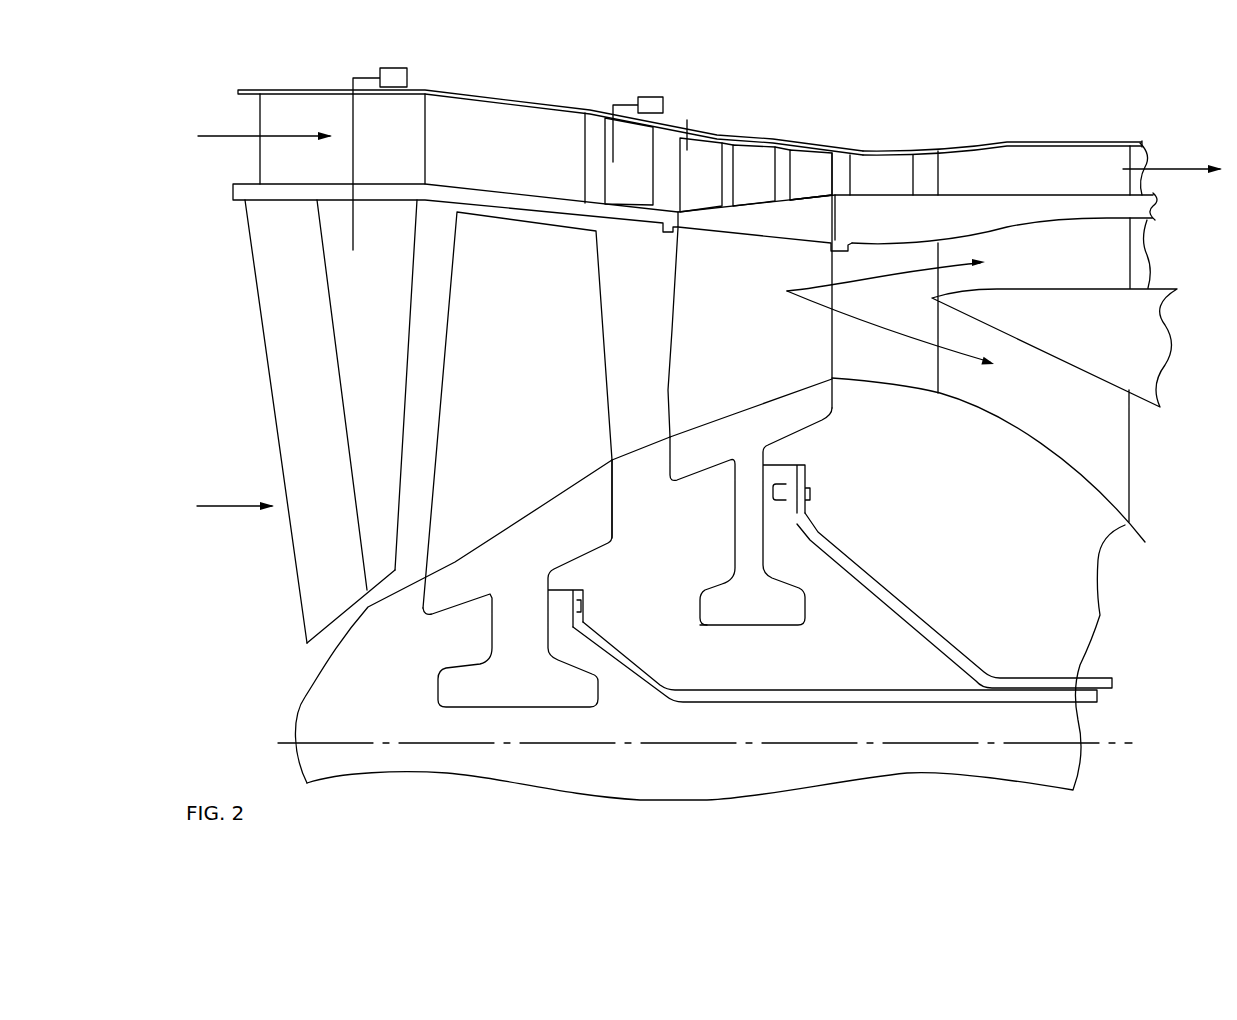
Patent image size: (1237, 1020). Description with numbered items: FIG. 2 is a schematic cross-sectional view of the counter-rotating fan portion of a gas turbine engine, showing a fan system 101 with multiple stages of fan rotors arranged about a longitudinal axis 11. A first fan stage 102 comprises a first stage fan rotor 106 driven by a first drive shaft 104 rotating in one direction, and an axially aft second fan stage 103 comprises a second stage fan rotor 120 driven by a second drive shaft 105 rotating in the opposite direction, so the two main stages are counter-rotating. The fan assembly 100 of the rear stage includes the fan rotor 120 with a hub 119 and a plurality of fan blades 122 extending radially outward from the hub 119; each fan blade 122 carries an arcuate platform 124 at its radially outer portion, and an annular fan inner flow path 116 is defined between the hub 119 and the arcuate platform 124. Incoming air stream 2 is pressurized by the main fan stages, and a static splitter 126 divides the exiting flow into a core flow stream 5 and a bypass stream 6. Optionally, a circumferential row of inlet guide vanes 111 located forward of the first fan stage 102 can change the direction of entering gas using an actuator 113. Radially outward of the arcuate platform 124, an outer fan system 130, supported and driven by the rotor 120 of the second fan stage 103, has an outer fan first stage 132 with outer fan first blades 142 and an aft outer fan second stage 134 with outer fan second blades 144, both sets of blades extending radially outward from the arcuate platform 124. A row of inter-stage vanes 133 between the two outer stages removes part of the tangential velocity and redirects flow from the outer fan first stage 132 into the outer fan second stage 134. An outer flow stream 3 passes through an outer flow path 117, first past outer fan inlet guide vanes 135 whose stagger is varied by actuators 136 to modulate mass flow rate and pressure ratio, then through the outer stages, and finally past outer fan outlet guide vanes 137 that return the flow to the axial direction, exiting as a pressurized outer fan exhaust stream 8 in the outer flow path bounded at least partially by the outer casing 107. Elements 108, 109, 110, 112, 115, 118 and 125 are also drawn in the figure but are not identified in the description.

The fan flow stream 2 is at (227, 505).
The outer flow stream 3 is at (250, 138).
The core flow stream 5 is at (898, 322).
The flow bypass stream 6 is at (935, 272).
The outer fan exhaust stream 8 is at (1163, 168).
The longitudinal axis 11 is at (287, 743).
The fan assembly 100 is at (818, 113).
The fan system 101 is at (672, 555).
The first fan stage 102 is at (428, 657).
The second fan stage 103 is at (838, 457).
The first drive shaft 104 is at (768, 690).
The second drive shaft 105 is at (920, 610).
The first stage fan rotor 106 is at (575, 523).
The outer casing 107 is at (1027, 138).
The fan casing compartment 108 is at (400, 113).
The bypass duct 109 is at (1098, 162).
The nacelle wall 110 is at (1062, 168).
The inlet guide vanes 111 is at (283, 347).
The fan blade trailing edge 112 is at (380, 257).
The actuator 113 is at (380, 73).
The inner casing 115 is at (598, 222).
The annular fan inner flow path 116 is at (654, 294).
The outer flow path 117 is at (500, 120).
The stator vane 118 is at (547, 320).
The hub 119 is at (765, 403).
The fan rotor 120 is at (803, 410).
The fan blades 122 is at (797, 355).
The arcuate platform 124 is at (782, 232).
The inner duct wall 125 is at (1127, 207).
The static splitter 126 is at (1060, 312).
The outer fan system 130 is at (786, 105).
The outer fan first stage 132 is at (700, 140).
The inter-stage vanes 133 is at (756, 147).
The outer fan second stage 134 is at (803, 163).
The outer fan inlet guide vanes 135 is at (637, 157).
The actuators 136 is at (643, 97).
The outer fan outlet guide vanes 137 is at (892, 163).
The outer fan first blades 142 is at (687, 150).
The outer fan second blades 144 is at (815, 158).